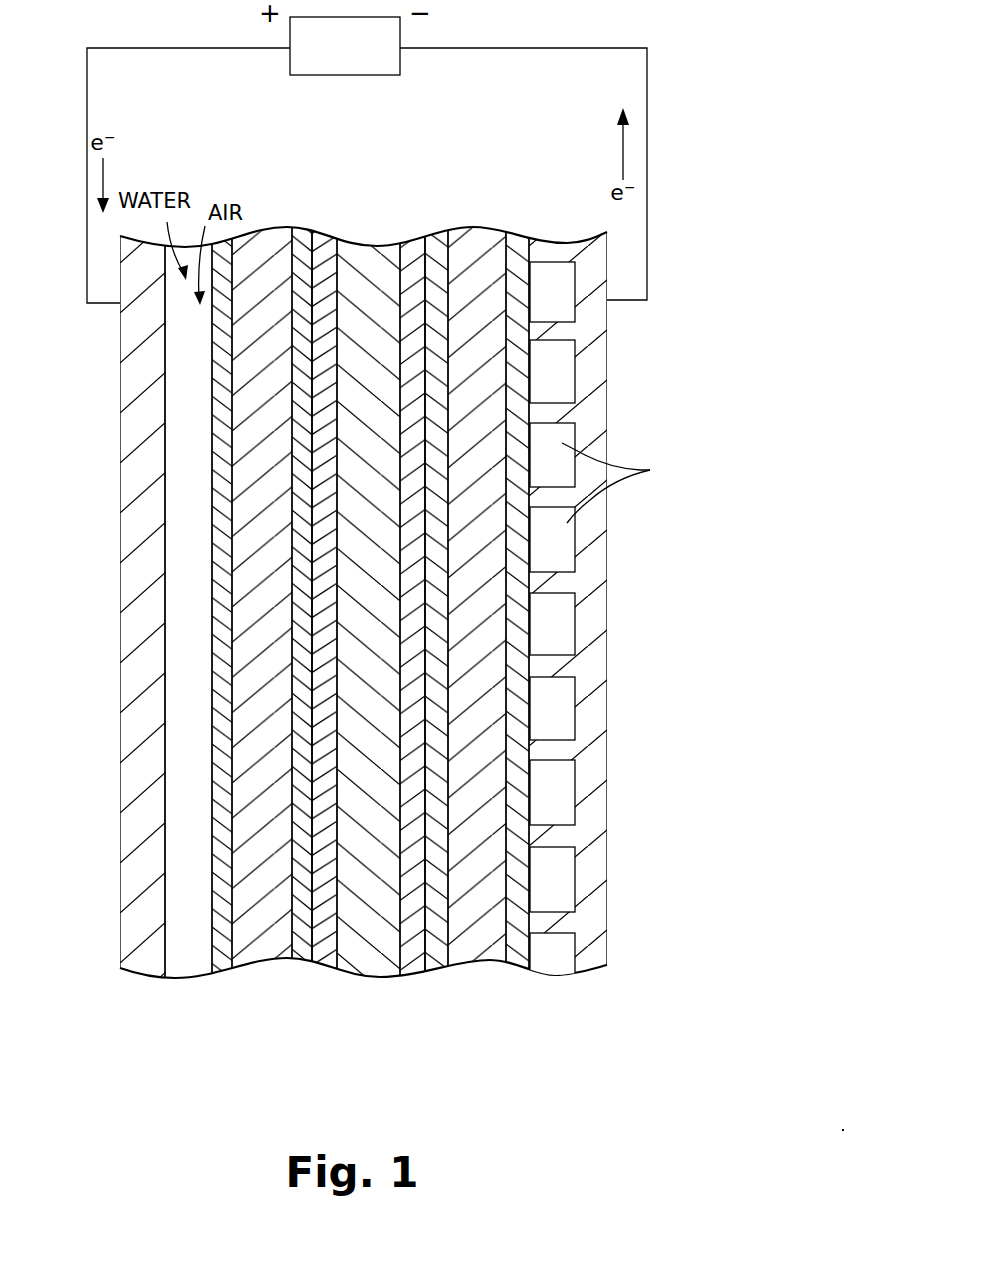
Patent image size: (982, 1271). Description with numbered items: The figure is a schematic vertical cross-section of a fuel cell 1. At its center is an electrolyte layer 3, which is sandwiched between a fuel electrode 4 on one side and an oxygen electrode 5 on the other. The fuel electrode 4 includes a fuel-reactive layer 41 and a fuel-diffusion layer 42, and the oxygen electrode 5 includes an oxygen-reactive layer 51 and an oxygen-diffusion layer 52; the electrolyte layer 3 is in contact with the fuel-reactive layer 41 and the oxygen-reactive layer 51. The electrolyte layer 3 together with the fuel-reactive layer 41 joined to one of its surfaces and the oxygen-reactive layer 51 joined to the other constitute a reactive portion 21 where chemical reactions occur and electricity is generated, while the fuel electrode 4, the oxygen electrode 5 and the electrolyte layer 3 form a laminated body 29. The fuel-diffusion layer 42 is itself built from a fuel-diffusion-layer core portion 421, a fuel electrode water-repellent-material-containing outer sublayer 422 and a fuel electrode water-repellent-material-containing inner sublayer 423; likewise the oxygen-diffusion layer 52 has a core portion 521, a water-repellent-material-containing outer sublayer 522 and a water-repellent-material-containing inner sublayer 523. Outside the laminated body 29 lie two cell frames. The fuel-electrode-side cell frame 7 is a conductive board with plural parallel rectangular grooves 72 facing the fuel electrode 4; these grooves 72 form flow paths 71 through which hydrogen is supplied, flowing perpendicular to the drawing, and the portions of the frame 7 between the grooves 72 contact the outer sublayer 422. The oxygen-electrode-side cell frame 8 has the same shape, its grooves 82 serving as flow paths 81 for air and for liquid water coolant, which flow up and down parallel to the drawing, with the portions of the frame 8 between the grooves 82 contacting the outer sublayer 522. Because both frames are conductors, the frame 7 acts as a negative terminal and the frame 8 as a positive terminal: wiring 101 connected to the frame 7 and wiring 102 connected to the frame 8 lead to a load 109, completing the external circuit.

The fuel cell 1 is at (125, 1034).
The electrolyte layer 3 is at (372, 968).
The fuel electrode 4 is at (397, 1093).
The oxygen electrode 5 is at (252, 1090).
The fuel-electrode-side cell frame 7 is at (556, 925).
The oxygen-electrode-side cell frame 8 is at (187, 962).
The reactive portion 21 is at (423, 218).
The laminated body 29 is at (208, 175).
The fuel-reactive layer 41 is at (407, 968).
The fuel-diffusion layer 42 is at (427, 1061).
The oxygen-reactive layer 51 is at (333, 955).
The oxygen-diffusion layer 52 is at (205, 1060).
The flow paths for hydrogen 71 is at (565, 562).
The grooves 72 is at (575, 552).
The flow paths for air 81 is at (203, 549).
The grooves 82 is at (187, 912).
The wiring 101 is at (647, 74).
The wiring 102 is at (87, 97).
The load 109 is at (395, 78).
The fuel-diffusion-layer core portion 421 is at (483, 945).
The fuel electrode water-repellent-material-containing outer sublayer 422 is at (520, 950).
The fuel electrode water-repellent-material-containing inner sublayer 423 is at (438, 972).
The core portion 521 is at (268, 940).
The water-repellent-material-containing outer sublayer 522 is at (223, 975).
The water-repellent-material-containing inner sublayer 523 is at (302, 958).